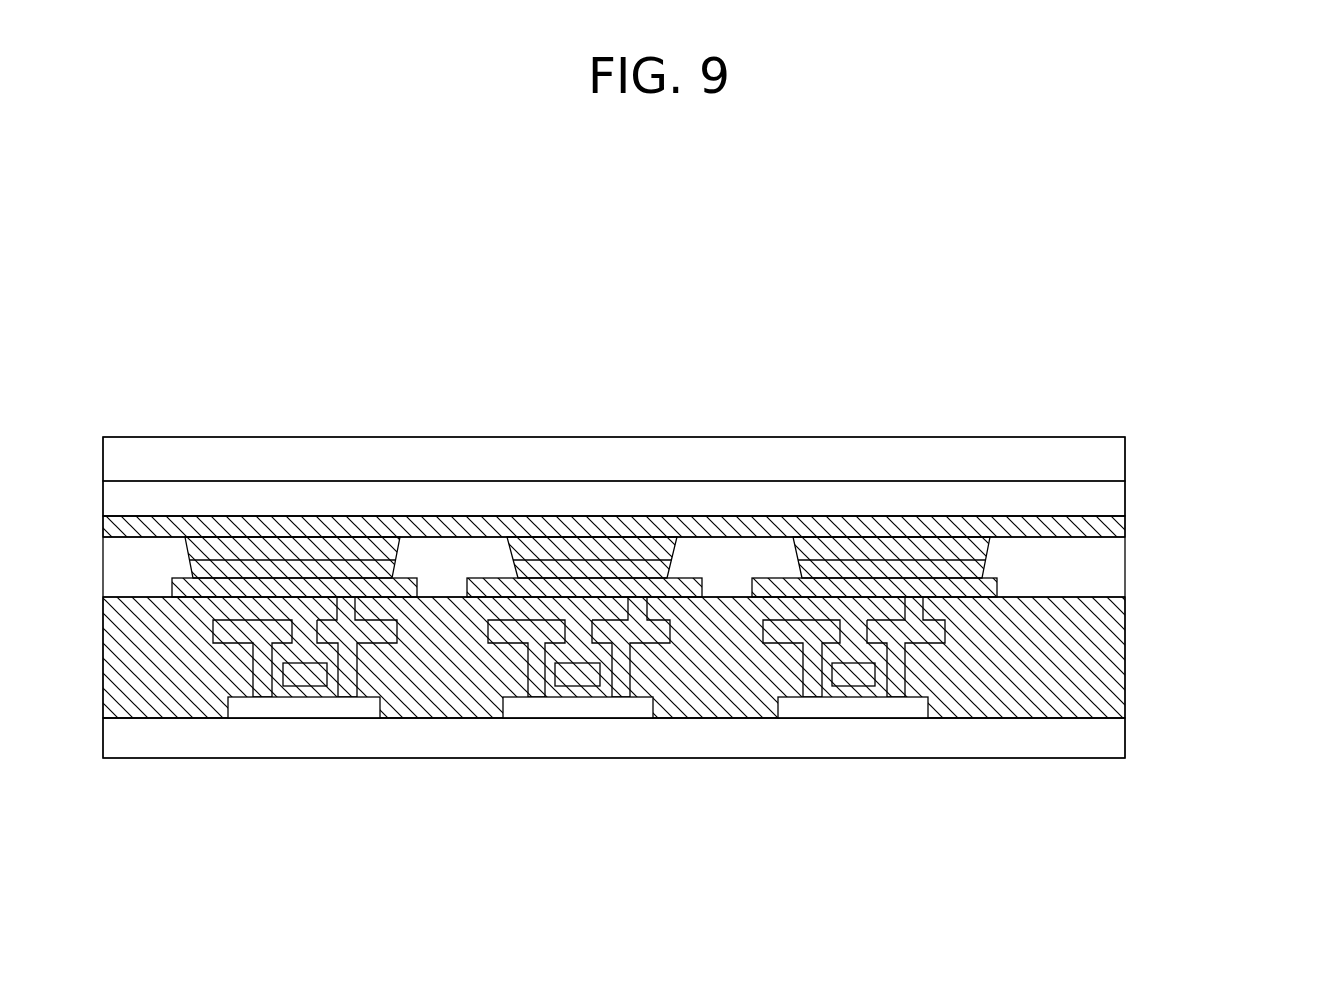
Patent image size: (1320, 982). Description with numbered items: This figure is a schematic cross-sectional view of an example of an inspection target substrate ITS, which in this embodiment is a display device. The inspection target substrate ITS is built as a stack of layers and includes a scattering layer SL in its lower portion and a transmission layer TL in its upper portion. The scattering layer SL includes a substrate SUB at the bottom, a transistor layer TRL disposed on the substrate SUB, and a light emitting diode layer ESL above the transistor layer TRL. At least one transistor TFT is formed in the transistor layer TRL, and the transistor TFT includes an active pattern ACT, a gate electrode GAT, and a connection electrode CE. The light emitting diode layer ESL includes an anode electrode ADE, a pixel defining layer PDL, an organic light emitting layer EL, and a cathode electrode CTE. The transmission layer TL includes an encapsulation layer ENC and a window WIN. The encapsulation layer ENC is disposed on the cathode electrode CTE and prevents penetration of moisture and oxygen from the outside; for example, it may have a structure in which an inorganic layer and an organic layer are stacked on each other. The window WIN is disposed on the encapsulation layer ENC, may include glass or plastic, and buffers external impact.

The inspection target substrate ITS is at (1133, 372).
The transmission layer TL is at (675, 476).
The window WIN is at (1125, 457).
The encapsulation layer ENC is at (1125, 493).
The light emitting diode layer ESL is at (680, 559).
The cathode electrode CTE is at (1125, 527).
The pixel defining layer PDL is at (1125, 548).
The organic light emitting layer EL is at (983, 562).
The anode electrode ADE is at (997, 584).
The scattering layer SL is at (701, 710).
The transistor layer TRL is at (680, 733).
The substrate SUB is at (680, 738).
The transistor TFT is at (585, 733).
The active pattern ACT is at (933, 829).
The gate electrode GAT is at (857, 678).
The connection electrode CE is at (918, 637).